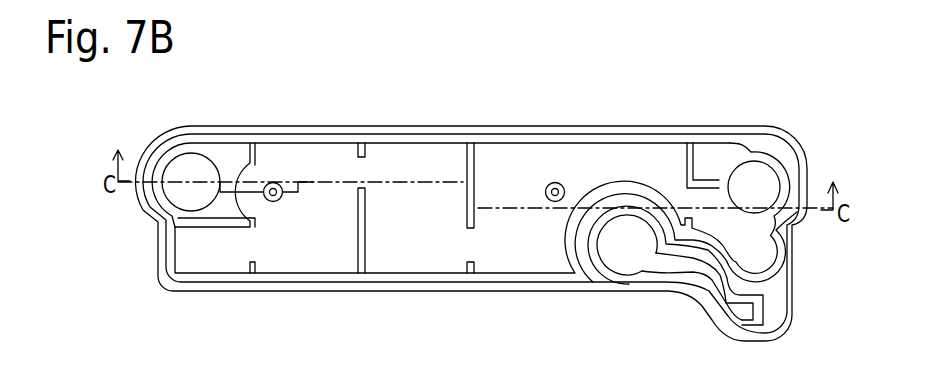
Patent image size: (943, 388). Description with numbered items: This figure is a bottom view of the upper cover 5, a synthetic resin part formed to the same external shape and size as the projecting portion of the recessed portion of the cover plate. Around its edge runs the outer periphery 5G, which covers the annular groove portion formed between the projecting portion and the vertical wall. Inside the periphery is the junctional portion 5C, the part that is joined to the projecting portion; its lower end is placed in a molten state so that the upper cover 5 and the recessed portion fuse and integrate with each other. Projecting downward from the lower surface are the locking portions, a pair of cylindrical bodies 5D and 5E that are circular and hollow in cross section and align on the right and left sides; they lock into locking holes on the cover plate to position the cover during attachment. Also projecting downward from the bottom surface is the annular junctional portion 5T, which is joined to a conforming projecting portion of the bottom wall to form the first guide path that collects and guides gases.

The upper cover 5 is at (705, 126).
The junctional portion 5C is at (324, 273).
The cylindrical body 5D is at (273, 182).
The cylindrical body 5E is at (557, 182).
The outer periphery 5G is at (553, 126).
The annular junctional portion 5T is at (609, 277).